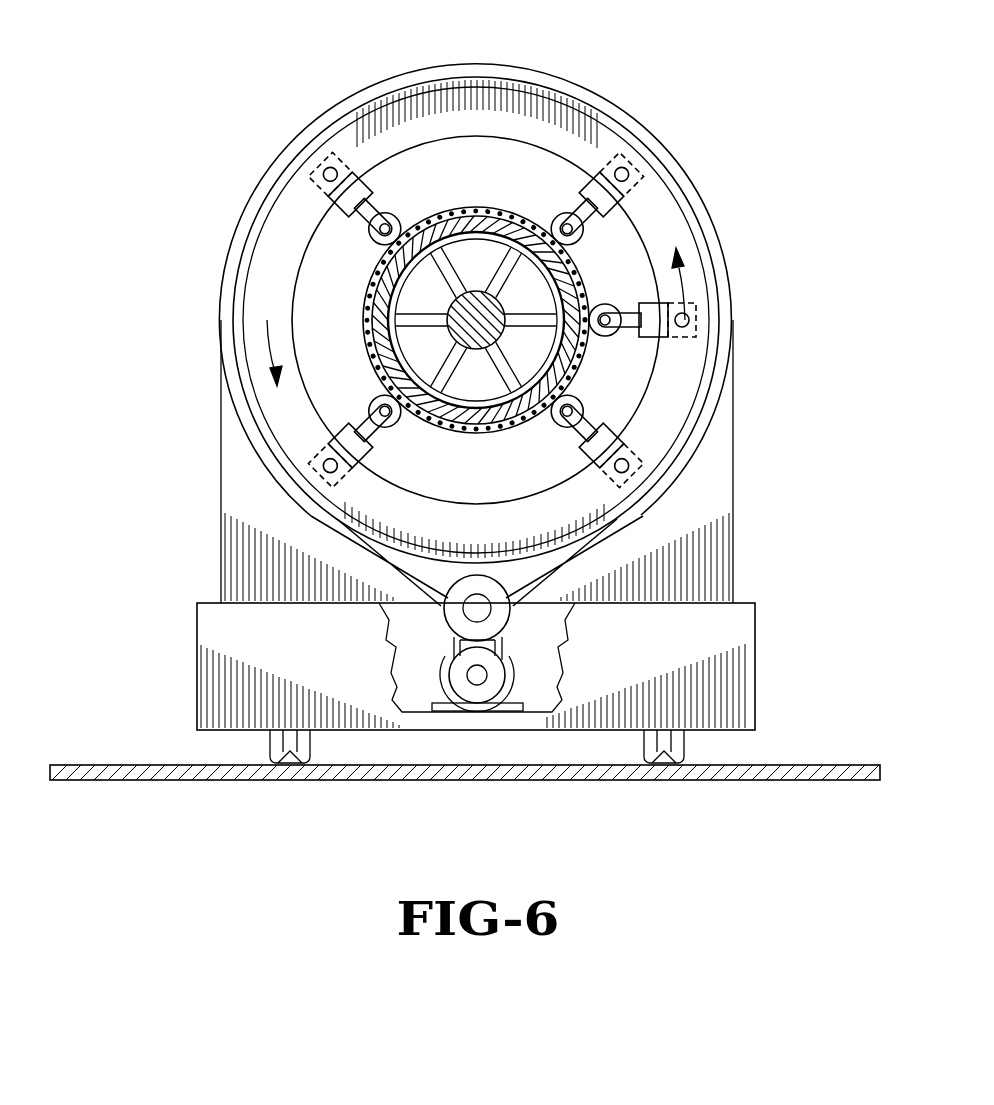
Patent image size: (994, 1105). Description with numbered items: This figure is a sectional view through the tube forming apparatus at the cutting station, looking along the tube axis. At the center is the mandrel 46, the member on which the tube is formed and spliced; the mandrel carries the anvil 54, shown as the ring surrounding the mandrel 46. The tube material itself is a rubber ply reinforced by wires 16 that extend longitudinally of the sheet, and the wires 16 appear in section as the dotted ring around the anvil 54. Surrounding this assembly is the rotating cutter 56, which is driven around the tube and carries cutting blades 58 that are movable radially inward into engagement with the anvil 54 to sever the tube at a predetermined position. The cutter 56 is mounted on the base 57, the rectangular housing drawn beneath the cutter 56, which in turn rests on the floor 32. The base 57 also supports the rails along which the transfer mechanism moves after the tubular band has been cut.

The wires 16 is at (365, 318).
The mandrel 46 is at (560, 293).
The anvil 54 is at (387, 360).
The rotating cutter 56 is at (695, 285).
The cutting blade 58 is at (395, 210).
The base 57 is at (731, 638).
The floor 32 is at (838, 777).